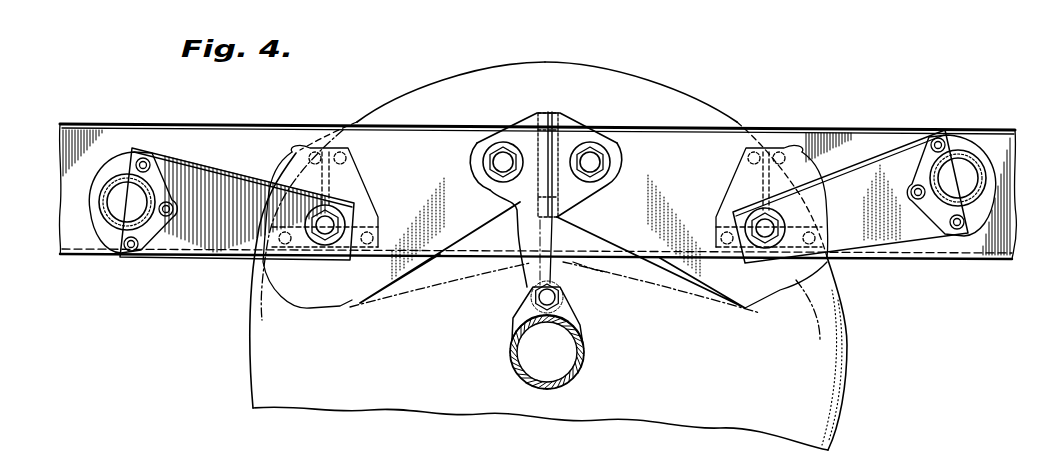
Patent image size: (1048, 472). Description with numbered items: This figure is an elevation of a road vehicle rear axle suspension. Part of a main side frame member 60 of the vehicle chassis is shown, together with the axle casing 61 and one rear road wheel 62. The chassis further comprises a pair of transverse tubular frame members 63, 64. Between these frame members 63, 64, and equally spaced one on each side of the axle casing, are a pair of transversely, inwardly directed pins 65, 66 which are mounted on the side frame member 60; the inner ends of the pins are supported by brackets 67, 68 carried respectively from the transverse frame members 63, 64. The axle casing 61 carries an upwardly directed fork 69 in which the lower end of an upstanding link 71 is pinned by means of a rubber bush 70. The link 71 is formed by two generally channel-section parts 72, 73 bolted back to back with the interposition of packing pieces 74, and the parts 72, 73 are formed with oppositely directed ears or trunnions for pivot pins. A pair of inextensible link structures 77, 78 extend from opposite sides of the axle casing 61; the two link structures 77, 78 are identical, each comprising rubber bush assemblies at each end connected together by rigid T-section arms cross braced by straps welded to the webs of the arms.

The main side frame member 60 is at (125, 134).
The axle casing 61 is at (518, 352).
The rear road wheel 62 is at (437, 80).
The transverse tubular frame member 63 is at (127, 226).
The transverse tubular frame member 64 is at (966, 155).
The transversely inwardly directed pin 65 is at (322, 232).
The transversely inwardly directed pin 66 is at (763, 236).
The bracket 67 is at (195, 165).
The bracket 68 is at (870, 170).
The upwardly directed fork 69 is at (520, 319).
The rubber bush 70 is at (563, 290).
The upstanding link 71 is at (562, 142).
The channel-section part 72 is at (504, 138).
The channel-section part 73 is at (604, 142).
The packing pieces 74 is at (551, 111).
The inextensible link structure 77 is at (397, 150).
The inextensible link structure 78 is at (697, 150).